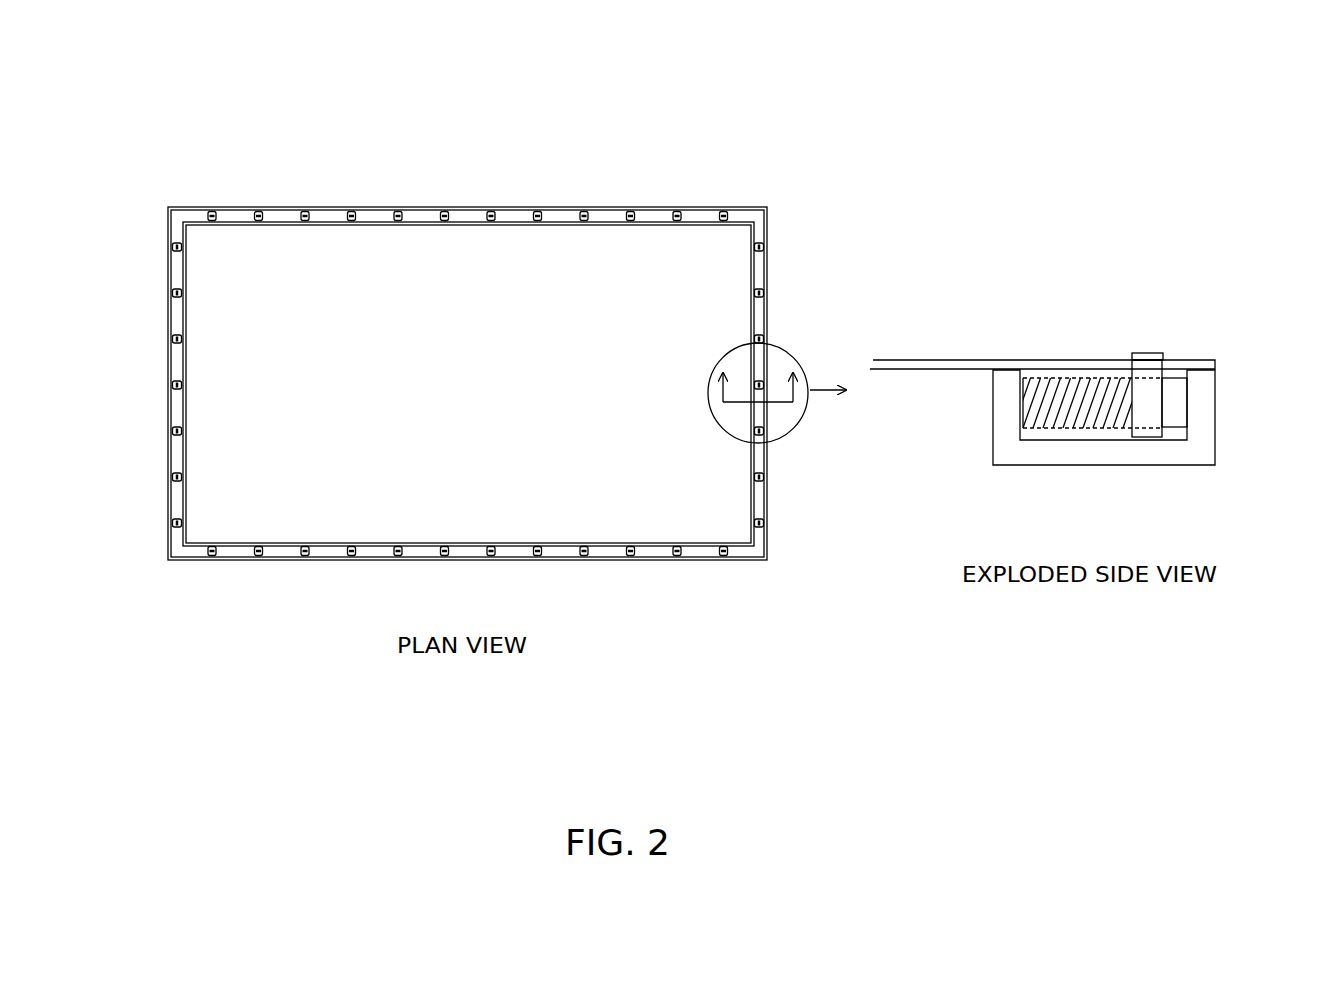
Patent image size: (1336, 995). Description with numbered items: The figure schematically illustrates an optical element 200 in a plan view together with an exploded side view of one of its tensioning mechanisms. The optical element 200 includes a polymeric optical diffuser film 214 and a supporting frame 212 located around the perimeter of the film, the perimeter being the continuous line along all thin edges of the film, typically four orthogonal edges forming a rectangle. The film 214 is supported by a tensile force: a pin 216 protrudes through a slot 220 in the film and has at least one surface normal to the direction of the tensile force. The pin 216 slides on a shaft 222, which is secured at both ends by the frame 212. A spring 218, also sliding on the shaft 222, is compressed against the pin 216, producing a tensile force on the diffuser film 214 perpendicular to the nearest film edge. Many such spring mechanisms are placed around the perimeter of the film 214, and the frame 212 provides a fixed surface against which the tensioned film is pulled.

The optical element 200 is at (540, 88).
The supporting frame 212 is at (1000, 447).
The polymeric optical diffuser film 214 is at (738, 273).
The pin 216 is at (1157, 353).
The spring 218 is at (1058, 410).
The slot 220 is at (1133, 363).
The shaft 222 is at (1177, 407).